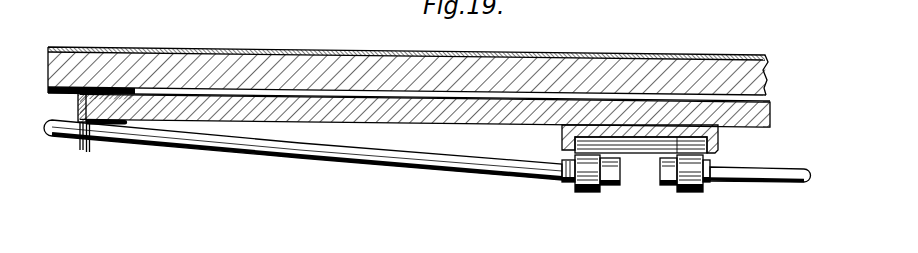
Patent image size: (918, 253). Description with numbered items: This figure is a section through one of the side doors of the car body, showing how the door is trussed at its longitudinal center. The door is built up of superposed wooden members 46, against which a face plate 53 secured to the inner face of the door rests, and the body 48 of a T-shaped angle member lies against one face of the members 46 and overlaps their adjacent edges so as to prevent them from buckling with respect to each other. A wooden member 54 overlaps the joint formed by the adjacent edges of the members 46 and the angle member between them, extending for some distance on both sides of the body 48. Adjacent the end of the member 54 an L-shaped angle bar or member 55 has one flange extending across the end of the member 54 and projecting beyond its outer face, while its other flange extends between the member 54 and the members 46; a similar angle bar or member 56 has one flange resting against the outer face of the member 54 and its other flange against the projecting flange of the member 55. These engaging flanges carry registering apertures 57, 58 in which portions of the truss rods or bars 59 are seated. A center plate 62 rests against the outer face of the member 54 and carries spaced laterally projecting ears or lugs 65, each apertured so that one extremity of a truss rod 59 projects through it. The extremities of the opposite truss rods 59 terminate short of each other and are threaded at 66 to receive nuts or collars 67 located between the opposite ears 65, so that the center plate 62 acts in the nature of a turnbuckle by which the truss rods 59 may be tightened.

The members 46 is at (364, 70).
The face plate 53 is at (284, 51).
The body 48 is at (631, 96).
The member 54 is at (477, 103).
The angle bar or member 55 is at (83, 93).
The angle bar or member 56 is at (102, 124).
The aperture 57 is at (80, 148).
The aperture 58 is at (87, 152).
The truss rods or bars 59 is at (448, 170).
The center plate 62 is at (681, 130).
The ears or lugs 65 is at (588, 193).
The threaded portion 66 is at (570, 185).
The nuts or collars 67 is at (619, 190).